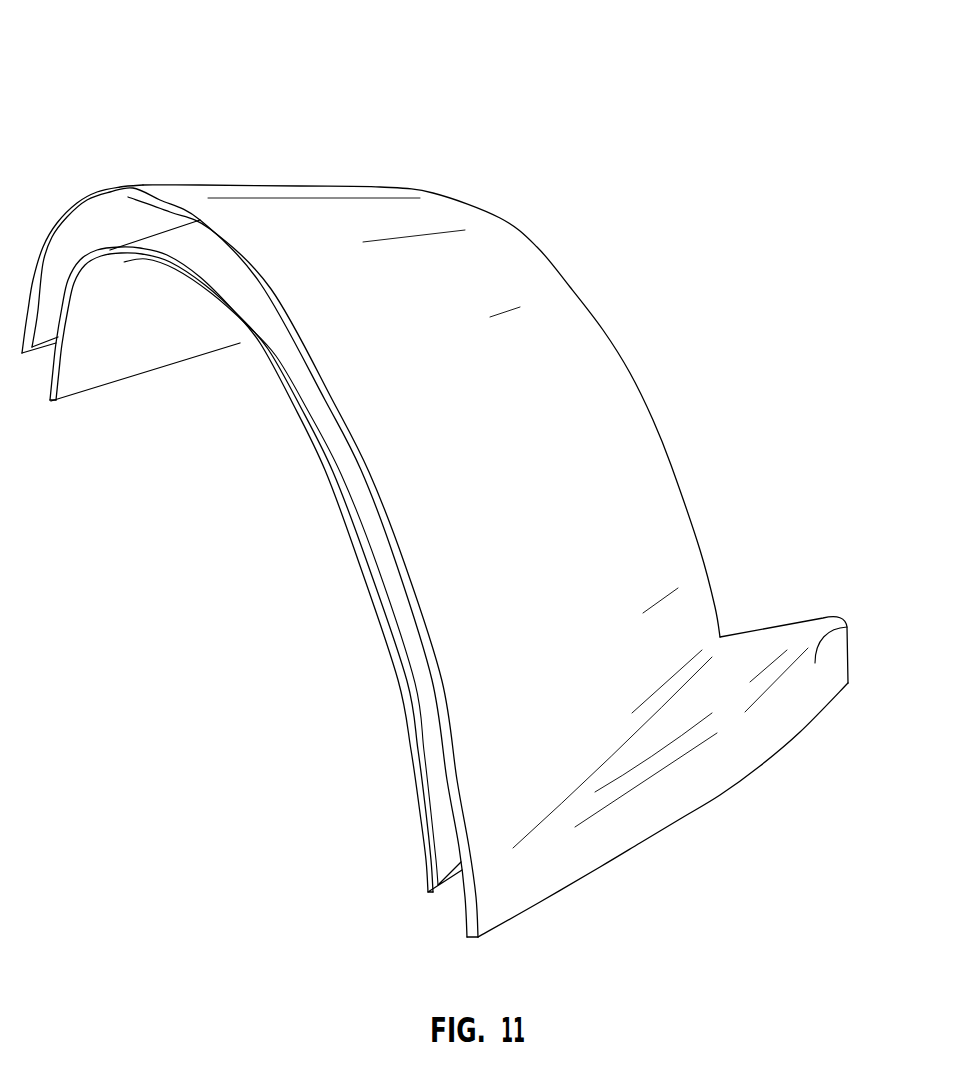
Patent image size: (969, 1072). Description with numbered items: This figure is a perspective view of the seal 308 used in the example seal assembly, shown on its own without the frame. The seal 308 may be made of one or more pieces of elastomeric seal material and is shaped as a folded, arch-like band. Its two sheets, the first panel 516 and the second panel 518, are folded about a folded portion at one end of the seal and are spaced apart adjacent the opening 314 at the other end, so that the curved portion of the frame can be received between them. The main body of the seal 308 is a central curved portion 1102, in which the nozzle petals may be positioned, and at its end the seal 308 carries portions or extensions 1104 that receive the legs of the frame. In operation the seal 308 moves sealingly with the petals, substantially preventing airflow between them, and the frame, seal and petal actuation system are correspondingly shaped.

The seal 308 is at (563, 76).
The central curved portion 1102 is at (537, 277).
The extension 1104 is at (848, 626).
The second panel 518 is at (199, 222).
The first panel 516 is at (233, 328).
The opening 314 is at (305, 410).